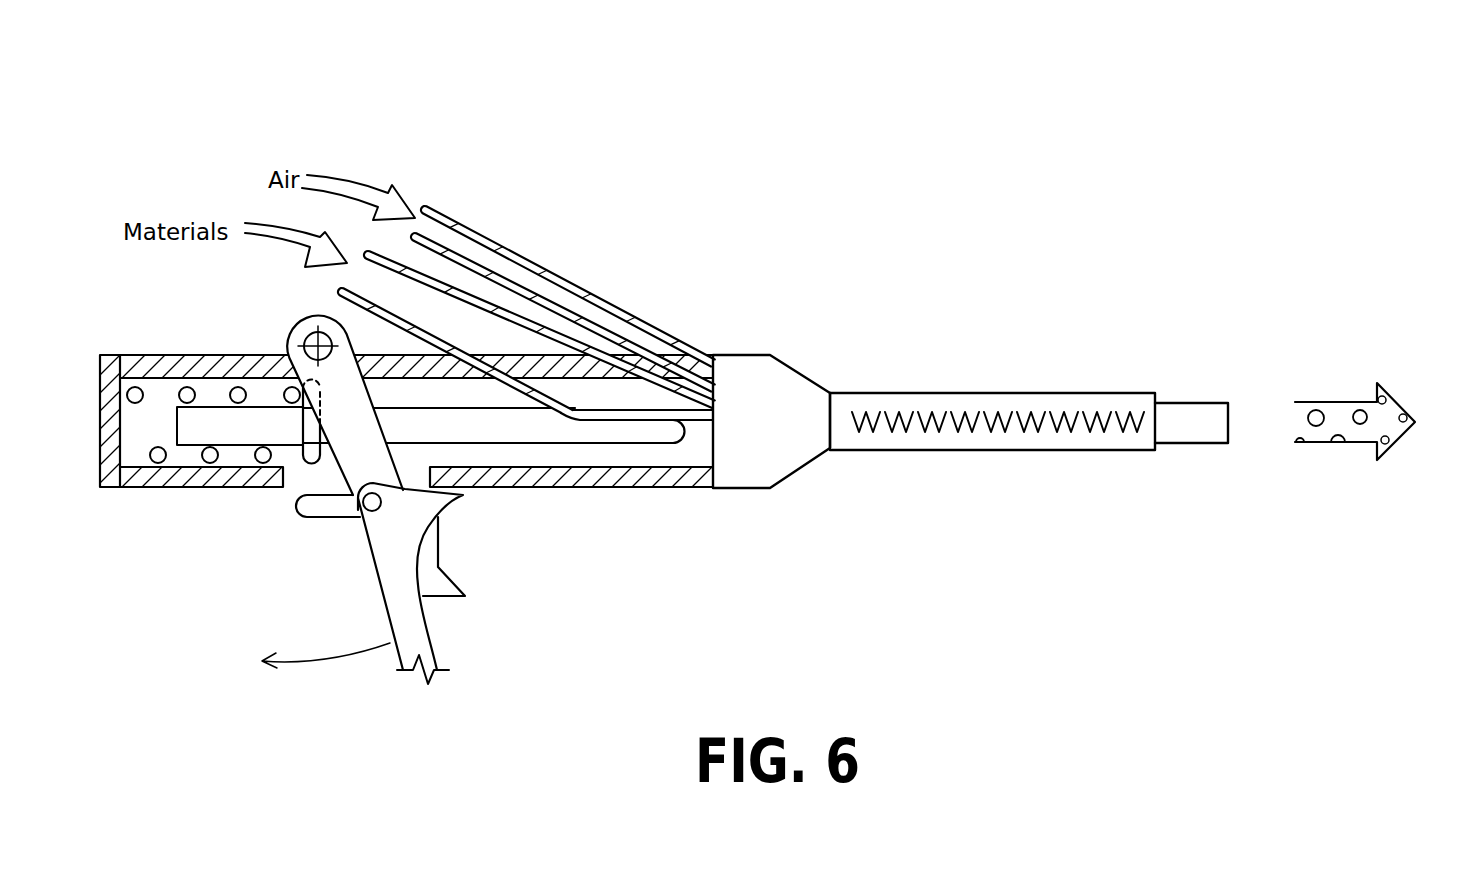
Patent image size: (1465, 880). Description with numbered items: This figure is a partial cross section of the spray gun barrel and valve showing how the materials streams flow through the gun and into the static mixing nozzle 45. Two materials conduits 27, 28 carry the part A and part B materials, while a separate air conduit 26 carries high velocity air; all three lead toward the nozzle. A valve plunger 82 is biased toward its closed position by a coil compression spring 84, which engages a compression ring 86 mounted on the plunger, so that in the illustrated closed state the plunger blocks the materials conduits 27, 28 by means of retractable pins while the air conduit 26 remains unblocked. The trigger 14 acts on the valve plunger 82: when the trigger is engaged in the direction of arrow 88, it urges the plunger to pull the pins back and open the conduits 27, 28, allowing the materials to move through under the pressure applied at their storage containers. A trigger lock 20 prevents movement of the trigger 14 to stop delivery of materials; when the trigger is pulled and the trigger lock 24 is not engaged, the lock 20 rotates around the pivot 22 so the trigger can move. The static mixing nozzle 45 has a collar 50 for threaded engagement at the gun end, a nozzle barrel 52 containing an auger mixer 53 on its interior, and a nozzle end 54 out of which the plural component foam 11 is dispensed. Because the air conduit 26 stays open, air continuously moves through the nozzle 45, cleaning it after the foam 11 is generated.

The plural component foam 11 is at (1423, 378).
The trigger 14 is at (405, 605).
The trigger lock 20 is at (317, 511).
The rotation point 22 is at (370, 513).
The trigger lock 24 is at (455, 589).
The air conduit 26 is at (543, 268).
The materials conduit 27 is at (343, 293).
The materials conduit 28 is at (378, 238).
The static mixing nozzle 45 is at (947, 407).
The collar 50 is at (778, 490).
The nozzle barrel 52 is at (992, 451).
The auger mixer 53 is at (893, 396).
The nozzle end 54 is at (1218, 445).
The valve plunger 82 is at (605, 428).
The coil compression spring 84 is at (158, 466).
The compression ring 86 is at (307, 466).
The arrow 88 is at (338, 661).